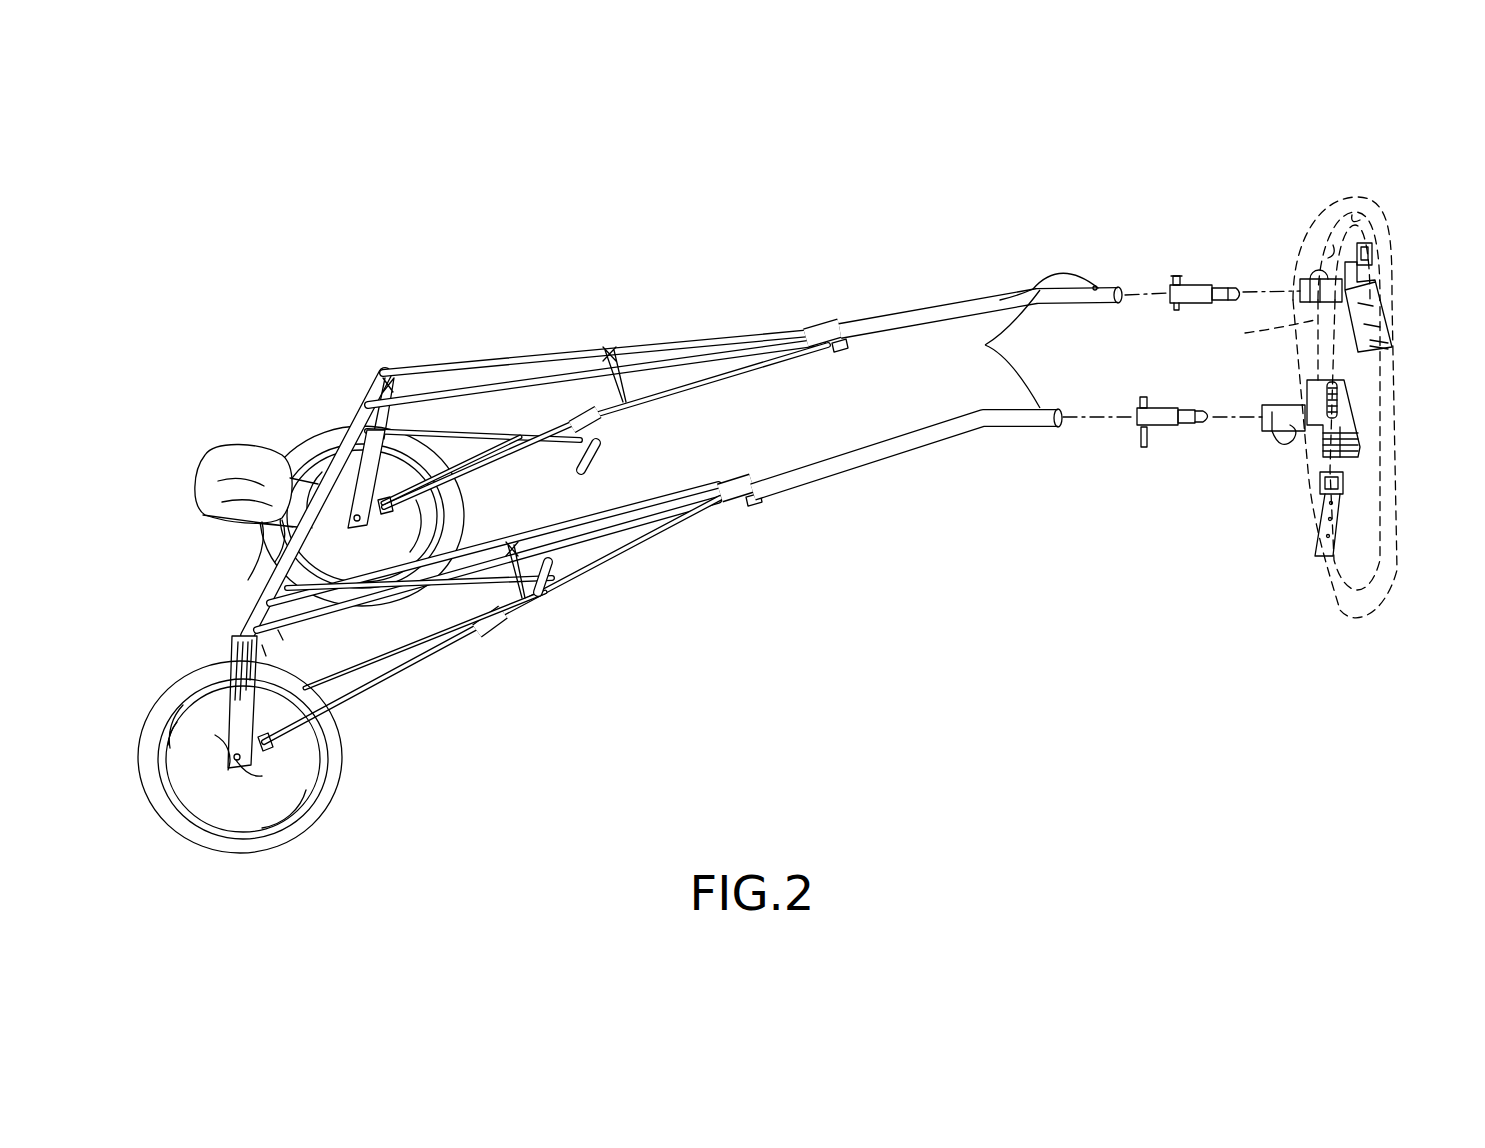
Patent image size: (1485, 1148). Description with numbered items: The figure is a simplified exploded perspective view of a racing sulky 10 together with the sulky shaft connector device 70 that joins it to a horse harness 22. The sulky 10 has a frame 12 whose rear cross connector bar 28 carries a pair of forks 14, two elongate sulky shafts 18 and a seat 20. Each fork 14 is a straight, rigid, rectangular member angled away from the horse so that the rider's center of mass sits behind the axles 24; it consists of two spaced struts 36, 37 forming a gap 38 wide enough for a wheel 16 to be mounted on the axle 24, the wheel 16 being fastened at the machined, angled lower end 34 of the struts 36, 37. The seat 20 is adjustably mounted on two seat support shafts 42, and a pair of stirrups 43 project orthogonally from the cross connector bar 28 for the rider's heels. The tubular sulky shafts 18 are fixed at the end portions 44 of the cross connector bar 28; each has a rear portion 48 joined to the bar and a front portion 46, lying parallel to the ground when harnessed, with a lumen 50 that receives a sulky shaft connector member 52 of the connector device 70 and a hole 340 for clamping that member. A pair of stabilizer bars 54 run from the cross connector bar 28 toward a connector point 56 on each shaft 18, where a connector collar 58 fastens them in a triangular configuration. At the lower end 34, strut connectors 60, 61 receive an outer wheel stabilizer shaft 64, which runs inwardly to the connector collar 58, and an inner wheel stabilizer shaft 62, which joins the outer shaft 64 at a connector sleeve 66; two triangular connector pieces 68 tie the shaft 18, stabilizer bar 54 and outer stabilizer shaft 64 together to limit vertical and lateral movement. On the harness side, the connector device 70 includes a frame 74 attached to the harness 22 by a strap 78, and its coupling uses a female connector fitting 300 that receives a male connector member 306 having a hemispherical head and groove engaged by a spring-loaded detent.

The racing sulky 10 is at (530, 218).
The frame 12 is at (716, 292).
The fork 14 is at (358, 466).
The wheel 16 is at (170, 718).
The sulky shaft 18 is at (942, 316).
The seat 20 is at (232, 458).
The harness 22 is at (1326, 195).
The axle 24 is at (355, 535).
The rear cross connector bar 28 is at (362, 410).
The lower end of the struts 34 is at (238, 768).
The strut 36 is at (235, 752).
The strut 37 is at (280, 635).
The gap 38 is at (264, 648).
The seat support shaft 42 is at (270, 535).
The stirrup 43 is at (598, 456).
The end portion of the cross connector bar 44 is at (378, 368).
The front portion of the sulky shaft 46 is at (1080, 254).
The rear portion of the sulky shaft 48 is at (515, 380).
The lumen 50 is at (1125, 290).
The sulky shaft connector member 52 is at (1217, 236).
The stabilizer bar 54 is at (470, 362).
The connector point 56 is at (803, 289).
The connector collar 58 is at (812, 325).
The strut connector 60 is at (270, 745).
The strut connector 61 is at (383, 512).
The inner wheel stabilizer shaft 62 is at (475, 472).
The outer wheel stabilizer shaft 64 is at (512, 435).
The connector sleeve 66 is at (497, 632).
The triangular shaped connector piece 68 is at (608, 350).
The sulky shaft connector device 70 is at (1302, 482).
The frame 74 is at (1375, 285).
The strap 78 is at (1267, 330).
The female connector fitting 300 is at (1309, 270).
The male connector member 306 is at (1170, 405).
The hole 340 is at (990, 349).